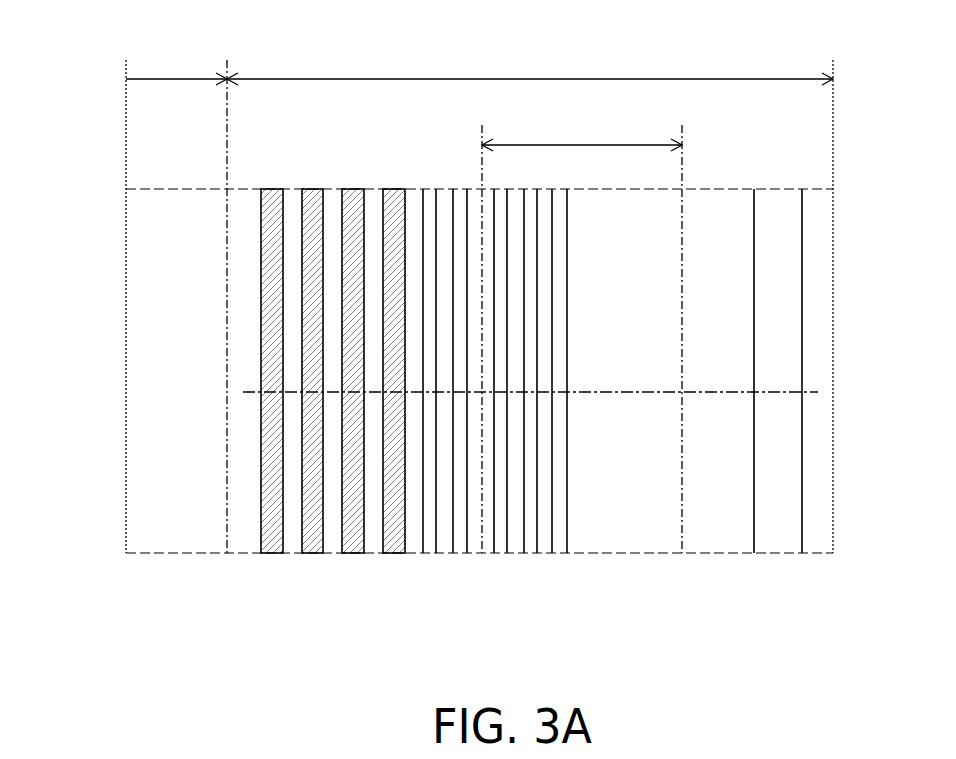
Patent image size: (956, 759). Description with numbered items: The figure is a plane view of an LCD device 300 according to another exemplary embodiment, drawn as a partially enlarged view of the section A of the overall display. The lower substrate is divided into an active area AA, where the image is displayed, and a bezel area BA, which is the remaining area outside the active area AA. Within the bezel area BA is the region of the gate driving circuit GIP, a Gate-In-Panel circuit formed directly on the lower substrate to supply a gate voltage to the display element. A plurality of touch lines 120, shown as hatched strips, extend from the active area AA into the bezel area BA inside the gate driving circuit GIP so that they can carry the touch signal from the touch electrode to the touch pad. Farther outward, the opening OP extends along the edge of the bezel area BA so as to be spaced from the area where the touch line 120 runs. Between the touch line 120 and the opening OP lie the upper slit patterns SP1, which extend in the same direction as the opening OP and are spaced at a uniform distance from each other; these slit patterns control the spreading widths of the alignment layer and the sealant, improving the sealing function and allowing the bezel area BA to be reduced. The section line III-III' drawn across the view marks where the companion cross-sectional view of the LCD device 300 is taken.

The LCD device 300 is at (805, 18).
The touch line 120 is at (272, 545).
The upper slit patterns SP1 is at (433, 545).
The opening OP is at (779, 543).
The section A is at (126, 216).
The active area AA is at (176, 72).
The bezel area BA is at (530, 72).
The gate driving circuit GIP is at (582, 338).
The line III-III' III is at (243, 392).